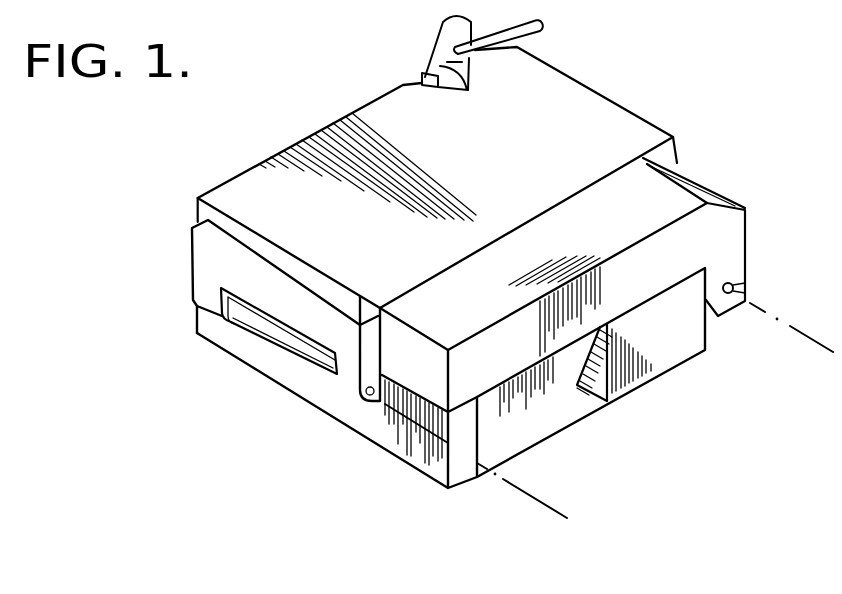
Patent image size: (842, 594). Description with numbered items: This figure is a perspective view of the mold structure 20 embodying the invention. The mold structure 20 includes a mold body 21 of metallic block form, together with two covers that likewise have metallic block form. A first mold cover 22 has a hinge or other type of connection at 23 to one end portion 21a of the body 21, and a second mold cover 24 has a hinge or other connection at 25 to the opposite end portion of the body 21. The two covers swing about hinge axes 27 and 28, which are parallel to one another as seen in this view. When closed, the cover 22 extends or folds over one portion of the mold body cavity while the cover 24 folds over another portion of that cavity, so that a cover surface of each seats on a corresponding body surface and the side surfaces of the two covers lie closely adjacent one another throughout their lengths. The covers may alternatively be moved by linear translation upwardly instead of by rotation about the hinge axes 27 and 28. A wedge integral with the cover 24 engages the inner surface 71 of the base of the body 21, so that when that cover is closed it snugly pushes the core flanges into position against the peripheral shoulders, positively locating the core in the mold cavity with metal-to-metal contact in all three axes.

The mold structure 20 is at (323, 114).
The mold body 21 is at (229, 356).
The end portion of body 21a is at (377, 413).
The first mold cover 22 is at (435, 177).
The hinge connection 23 is at (297, 348).
The second mold cover 24 is at (543, 276).
The hinge connection 25 is at (740, 285).
The hinge axis 27 is at (537, 502).
The hinge axis 28 is at (803, 338).
The inner surface of base 71 is at (588, 360).